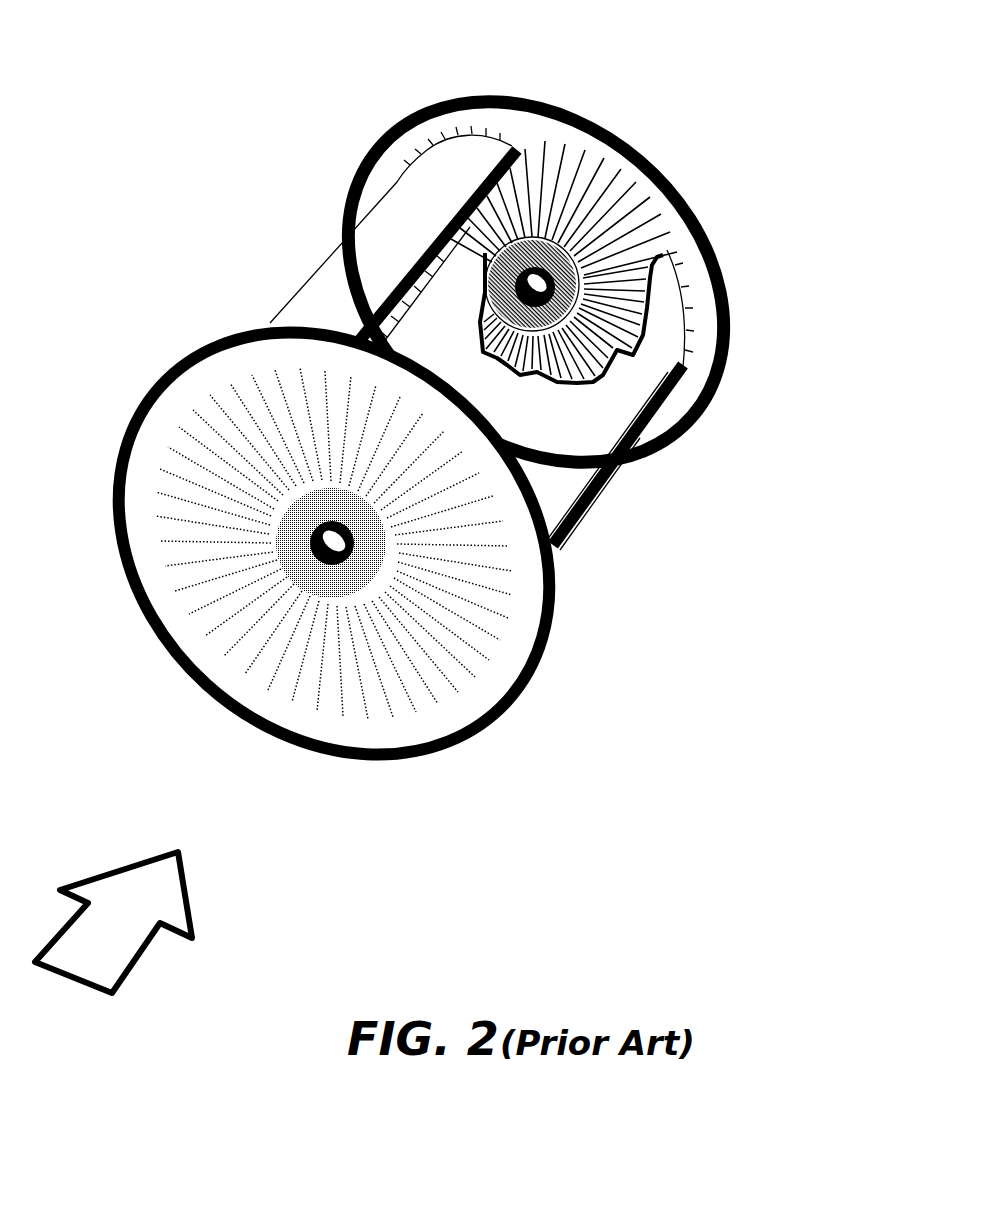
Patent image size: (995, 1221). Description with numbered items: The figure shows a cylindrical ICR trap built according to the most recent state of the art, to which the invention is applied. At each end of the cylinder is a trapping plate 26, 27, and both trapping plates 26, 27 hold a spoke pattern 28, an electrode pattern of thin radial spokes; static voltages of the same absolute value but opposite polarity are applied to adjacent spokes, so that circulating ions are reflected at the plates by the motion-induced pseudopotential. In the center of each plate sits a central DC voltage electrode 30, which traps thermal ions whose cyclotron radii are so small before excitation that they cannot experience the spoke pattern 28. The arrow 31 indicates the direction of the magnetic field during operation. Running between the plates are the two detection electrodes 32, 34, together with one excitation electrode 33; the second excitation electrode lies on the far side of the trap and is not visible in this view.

The trapping plate 26 is at (447, 745).
The trapping plate 27 is at (652, 148).
The spoke pattern 28 is at (570, 143).
The central DC voltage electrode 30 is at (640, 266).
The arrow 31 is at (113, 922).
The detection electrode 32 is at (338, 283).
The excitation electrode 33 is at (566, 437).
The detection electrode 34 is at (592, 515).